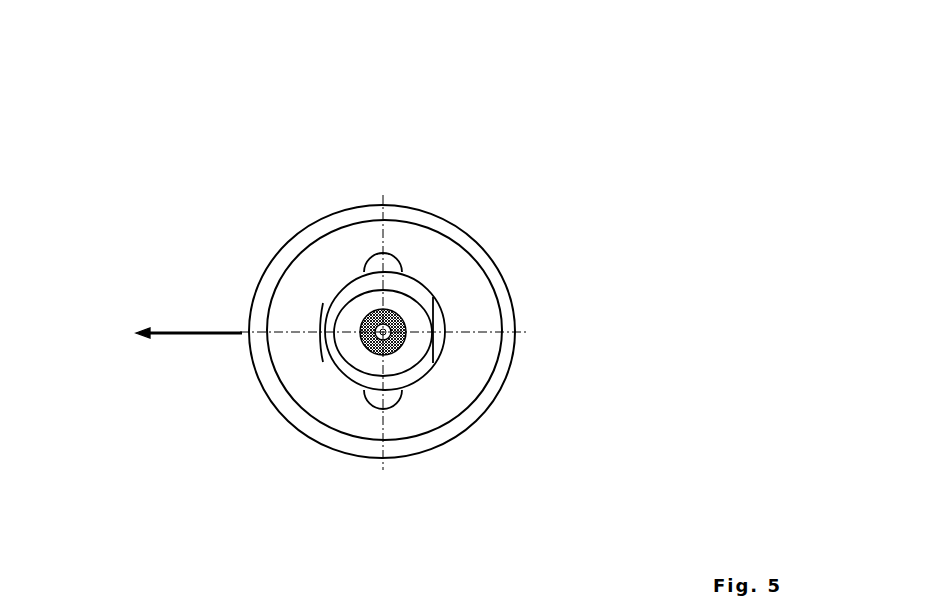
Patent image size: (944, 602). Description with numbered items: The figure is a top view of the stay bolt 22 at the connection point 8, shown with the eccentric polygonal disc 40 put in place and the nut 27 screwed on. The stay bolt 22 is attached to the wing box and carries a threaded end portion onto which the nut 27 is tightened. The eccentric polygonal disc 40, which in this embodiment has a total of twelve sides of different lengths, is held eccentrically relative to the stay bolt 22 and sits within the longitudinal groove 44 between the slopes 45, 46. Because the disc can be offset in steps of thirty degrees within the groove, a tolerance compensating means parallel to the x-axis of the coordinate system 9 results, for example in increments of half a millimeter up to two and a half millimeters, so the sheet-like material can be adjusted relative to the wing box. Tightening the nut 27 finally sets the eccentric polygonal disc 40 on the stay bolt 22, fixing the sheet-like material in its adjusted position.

The connection point 8 is at (533, 133).
The coordinate system 9 is at (201, 332).
The stay bolt 22 is at (400, 318).
The nut 27 is at (395, 348).
The eccentric polygonal disc 40 is at (353, 363).
The longitudinal groove 44 is at (356, 285).
The slope 45 is at (320, 320).
The slope 46 is at (443, 320).